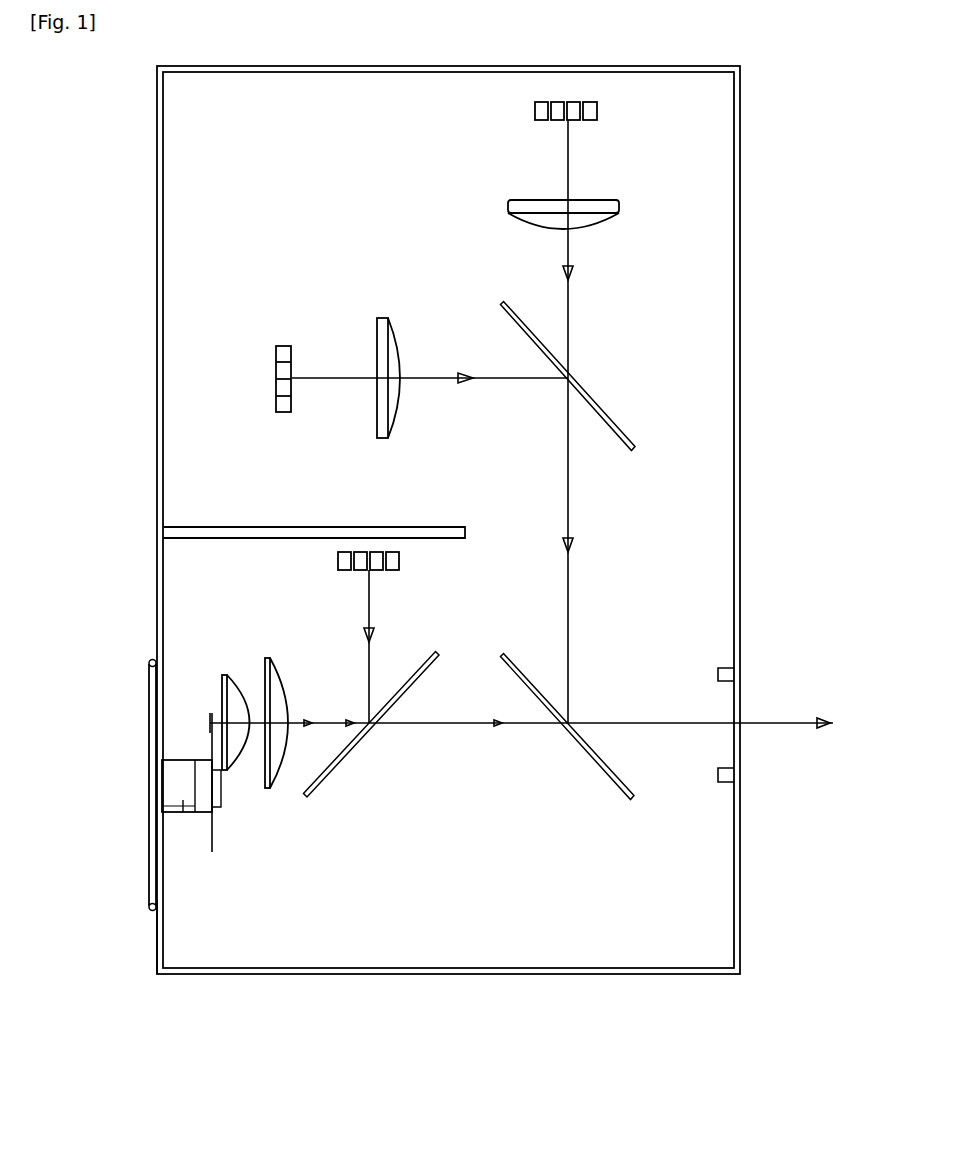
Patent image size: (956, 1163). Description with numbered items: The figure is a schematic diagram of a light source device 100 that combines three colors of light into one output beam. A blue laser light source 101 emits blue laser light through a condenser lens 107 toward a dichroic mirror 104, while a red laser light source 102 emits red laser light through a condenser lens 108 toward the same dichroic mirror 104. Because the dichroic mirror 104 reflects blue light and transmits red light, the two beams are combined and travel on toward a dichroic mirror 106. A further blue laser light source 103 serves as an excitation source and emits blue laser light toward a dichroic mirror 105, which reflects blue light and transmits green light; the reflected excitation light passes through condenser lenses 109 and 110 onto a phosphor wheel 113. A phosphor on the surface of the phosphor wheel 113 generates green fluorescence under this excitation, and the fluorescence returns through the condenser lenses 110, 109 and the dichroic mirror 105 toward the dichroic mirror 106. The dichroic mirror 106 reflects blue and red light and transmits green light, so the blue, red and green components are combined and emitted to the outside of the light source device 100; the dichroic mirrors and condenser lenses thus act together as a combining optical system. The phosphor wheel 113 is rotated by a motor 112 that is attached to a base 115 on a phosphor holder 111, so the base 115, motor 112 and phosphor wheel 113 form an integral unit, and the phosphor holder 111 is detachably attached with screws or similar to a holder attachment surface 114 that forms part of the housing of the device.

The light source device 100 is at (157, 112).
The blue laser light source 101 is at (275, 375).
The red laser light source 102 is at (597, 110).
The blue laser light source 103 is at (338, 561).
The dichroic mirror 104 is at (617, 425).
The dichroic mirror 105 is at (342, 753).
The dichroic mirror 106 is at (608, 775).
The condenser lens 107 is at (378, 318).
The condenser lens 108 is at (619, 212).
The condenser lens 109 is at (266, 659).
The condenser lens 110 is at (222, 675).
The phosphor holder 111 is at (148, 713).
The motor 112 is at (201, 805).
The phosphor wheel 113 is at (209, 815).
The holder attachment surface 114 is at (156, 934).
The base 115 is at (183, 805).